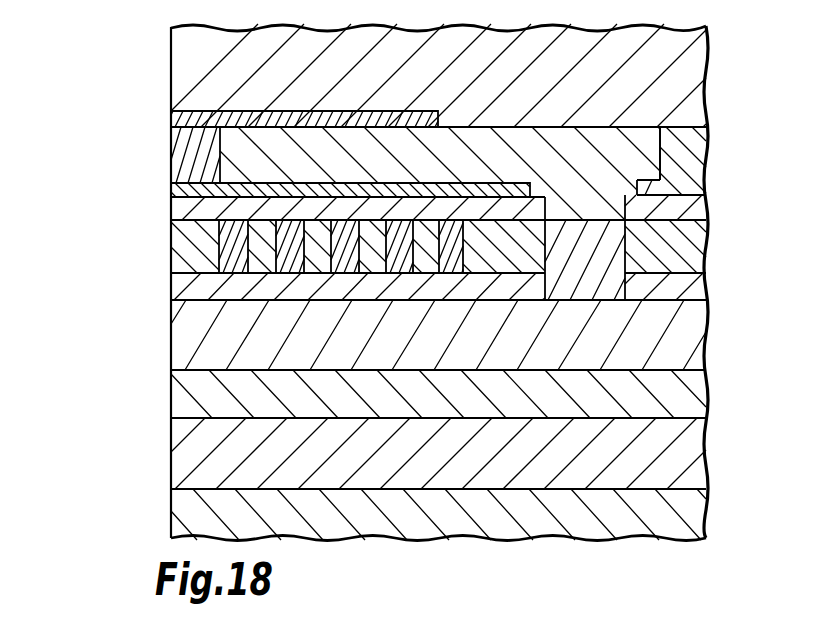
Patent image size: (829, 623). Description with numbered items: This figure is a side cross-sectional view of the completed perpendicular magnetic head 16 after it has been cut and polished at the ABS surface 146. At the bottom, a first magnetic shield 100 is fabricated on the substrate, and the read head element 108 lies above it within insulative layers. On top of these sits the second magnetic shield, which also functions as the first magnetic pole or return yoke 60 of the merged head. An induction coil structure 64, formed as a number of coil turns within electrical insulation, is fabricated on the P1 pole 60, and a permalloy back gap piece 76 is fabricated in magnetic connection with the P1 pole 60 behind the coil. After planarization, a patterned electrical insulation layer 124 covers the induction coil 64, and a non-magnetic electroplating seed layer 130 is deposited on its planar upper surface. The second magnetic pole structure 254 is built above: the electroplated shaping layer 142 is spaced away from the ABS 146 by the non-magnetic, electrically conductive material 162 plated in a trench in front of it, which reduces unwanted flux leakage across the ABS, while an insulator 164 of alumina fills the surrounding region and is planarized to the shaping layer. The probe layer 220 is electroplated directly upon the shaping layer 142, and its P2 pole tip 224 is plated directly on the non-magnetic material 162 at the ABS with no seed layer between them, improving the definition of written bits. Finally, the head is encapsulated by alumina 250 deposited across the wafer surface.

The perpendicular magnetic head 16 is at (160, 47).
The alumina 250 is at (345, 78).
The ABS surface 146 is at (172, 88).
The probe layer 220 is at (375, 111).
The P2 pole tip 224 is at (173, 120).
The non-magnetic electrically conductive material 162 is at (173, 156).
The shaping layer 142 is at (513, 140).
The insulator 164 is at (698, 153).
The second magnetic pole structure 254 is at (90, 192).
The non-magnetic electroplating seed layer 130 is at (173, 190).
The patterned electrical insulation layer 124 is at (173, 207).
The induction coil structure 64 is at (158, 257).
The back gap piece 76 is at (612, 263).
The second magnetic shield (S2) / first magnetic pole (P1) 60 is at (173, 337).
The read head element 108 is at (222, 393).
The first magnetic shield (S1) 100 is at (187, 461).